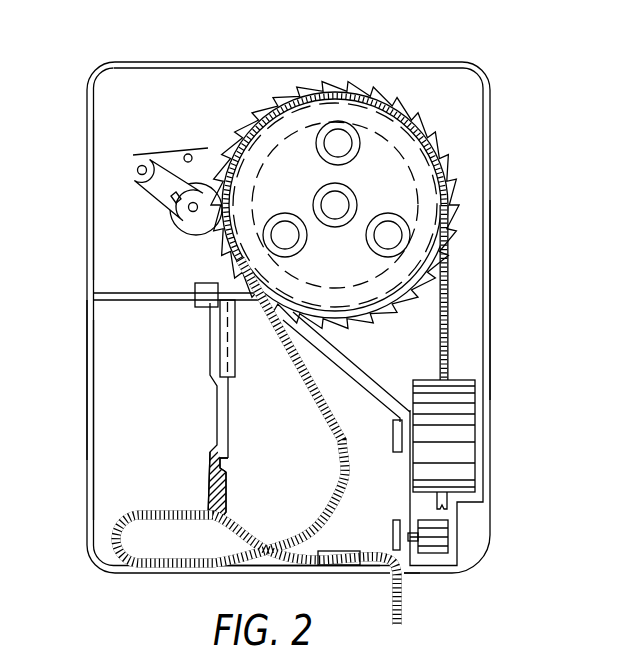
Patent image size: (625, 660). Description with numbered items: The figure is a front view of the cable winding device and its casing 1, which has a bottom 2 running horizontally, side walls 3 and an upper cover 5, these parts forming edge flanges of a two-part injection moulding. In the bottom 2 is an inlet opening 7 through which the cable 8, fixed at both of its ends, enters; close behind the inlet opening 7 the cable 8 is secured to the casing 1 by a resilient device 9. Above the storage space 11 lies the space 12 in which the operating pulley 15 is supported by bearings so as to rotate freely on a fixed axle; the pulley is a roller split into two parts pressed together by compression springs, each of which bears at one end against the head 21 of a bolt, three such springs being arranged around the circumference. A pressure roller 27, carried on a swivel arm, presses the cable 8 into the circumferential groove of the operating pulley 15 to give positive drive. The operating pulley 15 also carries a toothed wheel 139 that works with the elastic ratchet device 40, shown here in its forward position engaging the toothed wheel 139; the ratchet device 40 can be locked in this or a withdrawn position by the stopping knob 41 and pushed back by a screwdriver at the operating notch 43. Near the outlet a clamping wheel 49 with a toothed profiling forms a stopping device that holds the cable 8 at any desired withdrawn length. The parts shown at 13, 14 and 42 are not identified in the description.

The casing 1 is at (278, 47).
The bottom 2 is at (205, 573).
The side walls 3 is at (87, 376).
The upper cover 5 is at (216, 62).
The inlet opening 7 is at (404, 578).
The cable 8 is at (392, 603).
The resilient device 9 is at (333, 552).
The storage space 11 is at (137, 413).
The space 12 is at (160, 113).
The guide plate 13 is at (297, 329).
The partition wall 14 is at (99, 293).
The operating pulley 15 is at (366, 125).
The head of bolt 21 is at (347, 147).
The pressure roller 27 is at (185, 222).
The ratchet device 40 is at (210, 348).
The stopping knob 41 is at (227, 513).
The shoulder 42 is at (226, 470).
The operating notch 43 is at (217, 406).
The clamping wheel 49 is at (445, 540).
The toothed wheel 139 is at (266, 104).